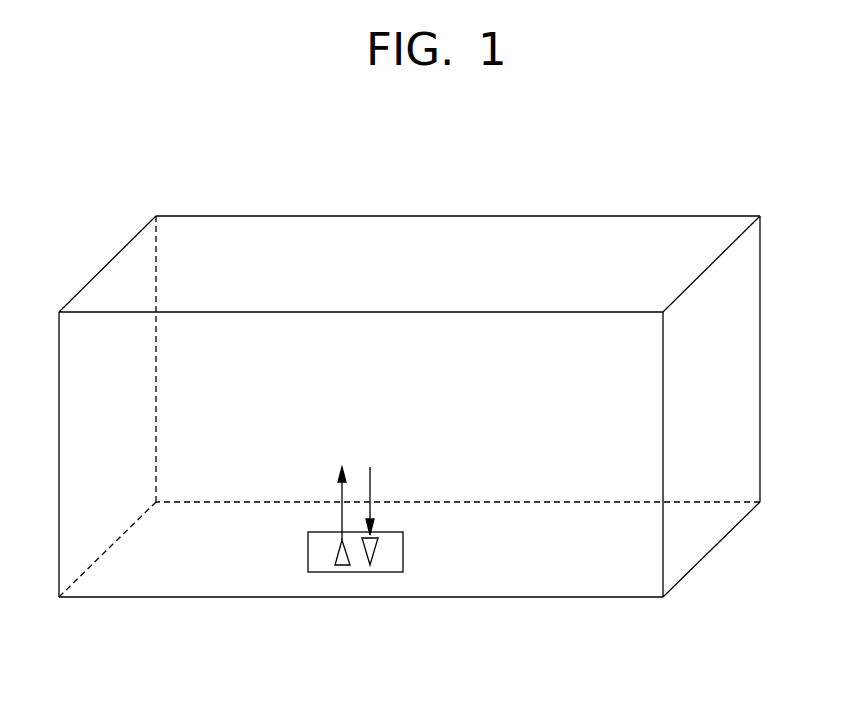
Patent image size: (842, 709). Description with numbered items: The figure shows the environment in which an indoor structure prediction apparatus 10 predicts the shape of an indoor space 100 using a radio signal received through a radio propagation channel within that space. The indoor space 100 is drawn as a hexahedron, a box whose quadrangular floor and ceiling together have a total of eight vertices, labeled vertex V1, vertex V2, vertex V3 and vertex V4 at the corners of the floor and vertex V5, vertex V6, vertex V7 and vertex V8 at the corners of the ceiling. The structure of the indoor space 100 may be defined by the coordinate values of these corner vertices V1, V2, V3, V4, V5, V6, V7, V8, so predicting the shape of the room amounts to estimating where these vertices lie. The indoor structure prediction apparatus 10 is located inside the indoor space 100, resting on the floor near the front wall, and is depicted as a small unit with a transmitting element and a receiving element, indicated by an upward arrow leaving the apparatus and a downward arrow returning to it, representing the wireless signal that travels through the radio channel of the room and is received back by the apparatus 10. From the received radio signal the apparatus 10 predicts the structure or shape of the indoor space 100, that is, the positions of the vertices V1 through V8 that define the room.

The indoor space 100 is at (413, 381).
The indoor structure prediction apparatus 10 is at (355, 573).
The vertex V1 is at (349, 467).
The vertex V2 is at (711, 464).
The vertex V3 is at (473, 370).
The vertex V4 is at (143, 361).
The vertex V5 is at (349, 269).
The vertex V6 is at (711, 276).
The vertex V7 is at (467, 203).
The vertex V8 is at (148, 204).